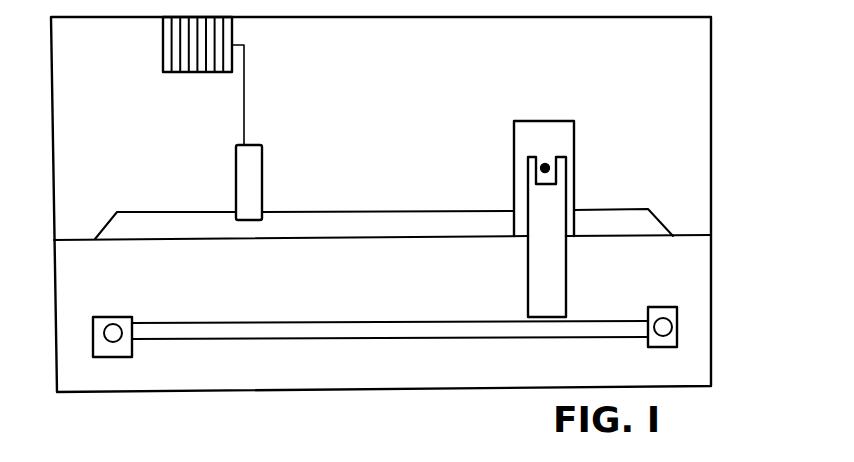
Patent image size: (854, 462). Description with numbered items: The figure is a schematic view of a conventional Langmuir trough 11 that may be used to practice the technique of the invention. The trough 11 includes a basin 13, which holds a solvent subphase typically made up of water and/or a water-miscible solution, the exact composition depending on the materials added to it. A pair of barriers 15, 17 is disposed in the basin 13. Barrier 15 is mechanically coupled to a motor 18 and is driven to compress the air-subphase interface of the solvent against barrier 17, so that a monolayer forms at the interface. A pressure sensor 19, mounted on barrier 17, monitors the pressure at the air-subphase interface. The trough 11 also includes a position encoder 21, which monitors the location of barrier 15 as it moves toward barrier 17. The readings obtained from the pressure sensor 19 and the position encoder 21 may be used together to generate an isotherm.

The Langmuir trough 11 is at (744, 178).
The basin 13 is at (651, 211).
The barrier 15 is at (537, 127).
The barrier 17 is at (234, 168).
The motor 18 is at (678, 313).
The pressure sensor 19 is at (161, 50).
The position encoder 21 is at (98, 317).